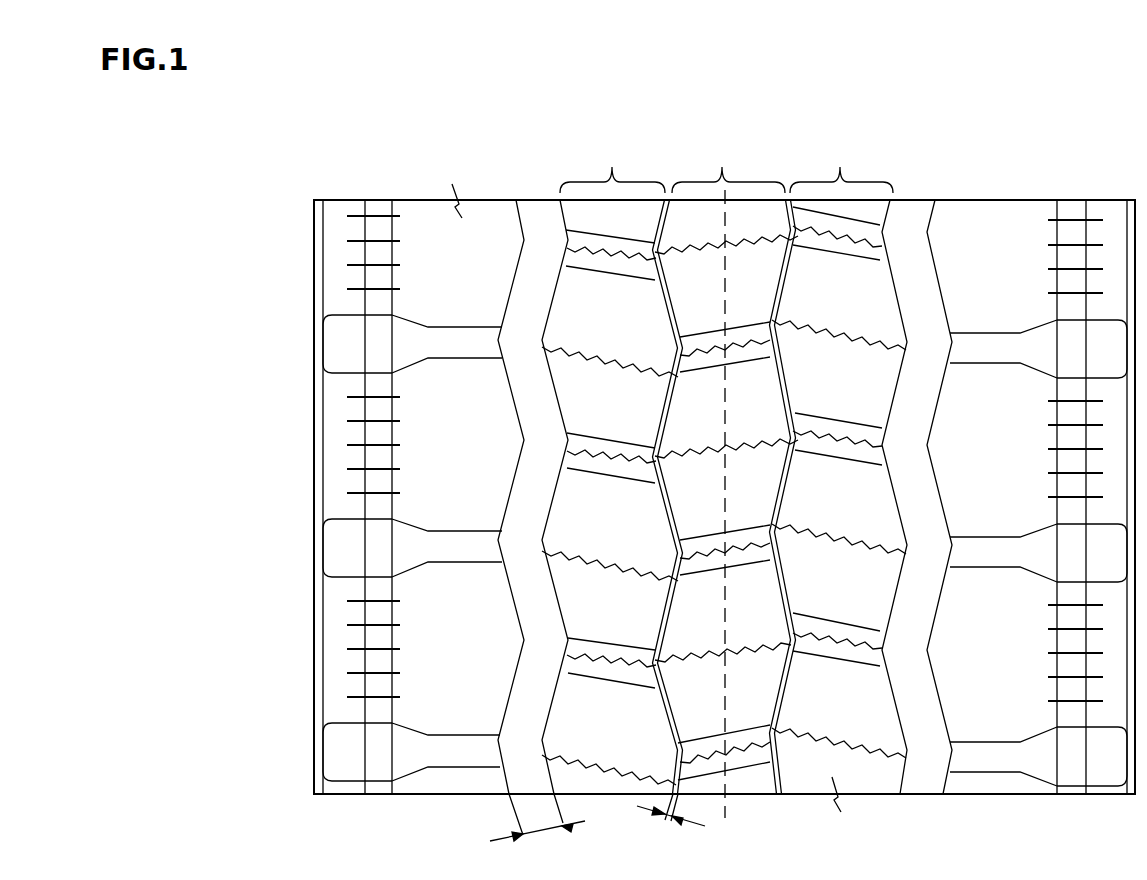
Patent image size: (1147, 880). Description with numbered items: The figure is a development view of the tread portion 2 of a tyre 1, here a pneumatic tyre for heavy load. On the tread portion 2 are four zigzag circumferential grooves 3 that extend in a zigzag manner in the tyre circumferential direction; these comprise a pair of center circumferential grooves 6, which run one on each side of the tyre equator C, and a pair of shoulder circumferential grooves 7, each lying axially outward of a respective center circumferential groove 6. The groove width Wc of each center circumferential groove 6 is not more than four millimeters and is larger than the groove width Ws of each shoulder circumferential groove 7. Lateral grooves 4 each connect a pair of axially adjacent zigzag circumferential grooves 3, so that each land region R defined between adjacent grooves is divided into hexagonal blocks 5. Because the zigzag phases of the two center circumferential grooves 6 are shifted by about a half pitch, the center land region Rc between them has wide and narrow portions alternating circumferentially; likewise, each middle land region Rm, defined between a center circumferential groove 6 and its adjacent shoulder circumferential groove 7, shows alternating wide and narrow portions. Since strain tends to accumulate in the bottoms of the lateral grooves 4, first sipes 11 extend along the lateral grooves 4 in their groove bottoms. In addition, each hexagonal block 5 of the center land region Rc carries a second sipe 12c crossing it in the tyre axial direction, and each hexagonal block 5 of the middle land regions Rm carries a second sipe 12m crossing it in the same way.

The tyre 1 is at (1013, 186).
The tread portion 2 is at (724, 498).
The zigzag circumferential grooves 3 is at (537, 208).
The center circumferential grooves 6 is at (724, 497).
The shoulder circumferential grooves 7 is at (725, 497).
The lateral grooves 4 is at (610, 267).
The hexagonal blocks 5 is at (583, 406).
The first sipes 11 is at (703, 347).
The second sipe 12m is at (630, 562).
The second sipe 12c is at (687, 660).
The land regions R is at (726, 164).
The middle land regions Rm is at (726, 180).
The center land region Rc is at (728, 180).
The groove width of shoulder circumferential groove Ws is at (537, 827).
The groove width of center circumferential groove Wc is at (671, 822).
The tyre equator C is at (725, 519).